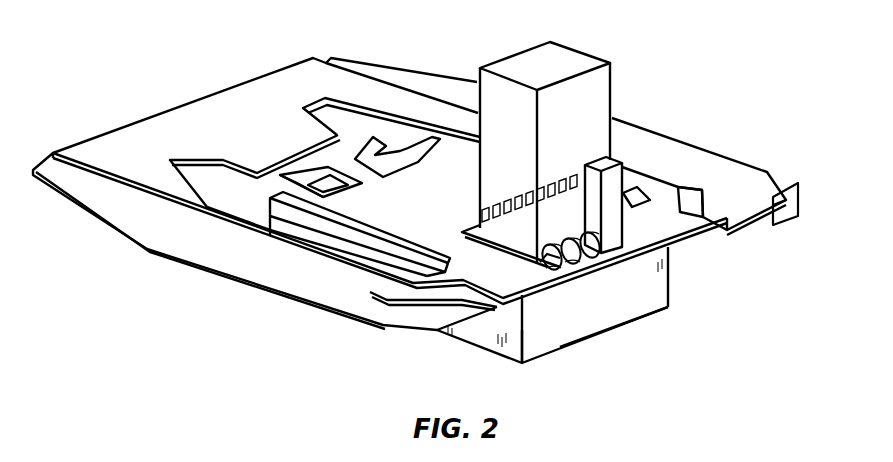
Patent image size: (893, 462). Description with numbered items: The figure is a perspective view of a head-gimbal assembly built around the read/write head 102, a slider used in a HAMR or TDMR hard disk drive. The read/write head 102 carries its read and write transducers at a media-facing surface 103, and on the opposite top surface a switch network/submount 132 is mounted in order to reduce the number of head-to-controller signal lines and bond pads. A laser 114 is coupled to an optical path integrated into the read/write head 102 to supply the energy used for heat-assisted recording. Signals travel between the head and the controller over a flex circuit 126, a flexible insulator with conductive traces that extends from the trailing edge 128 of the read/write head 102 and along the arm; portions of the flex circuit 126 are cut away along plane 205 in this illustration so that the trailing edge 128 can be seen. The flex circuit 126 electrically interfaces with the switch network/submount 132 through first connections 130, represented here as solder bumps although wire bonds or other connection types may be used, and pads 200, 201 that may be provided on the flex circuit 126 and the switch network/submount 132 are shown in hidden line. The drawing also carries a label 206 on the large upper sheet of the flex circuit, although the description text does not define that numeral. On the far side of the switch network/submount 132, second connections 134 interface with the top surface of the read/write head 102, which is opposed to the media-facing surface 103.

The read/write head 102 is at (671, 282).
The media-facing surface 103 is at (613, 332).
The laser 114 is at (613, 160).
The flex circuit 126 is at (285, 295).
The trailing edge 128 is at (533, 357).
The first connections 130 is at (578, 268).
The switch network/submount 132 is at (590, 53).
The second connections 134 is at (507, 205).
The pad 200 is at (553, 270).
The pad 201 is at (543, 258).
The plane 205 is at (782, 222).
The antenna sheet 206 is at (152, 130).